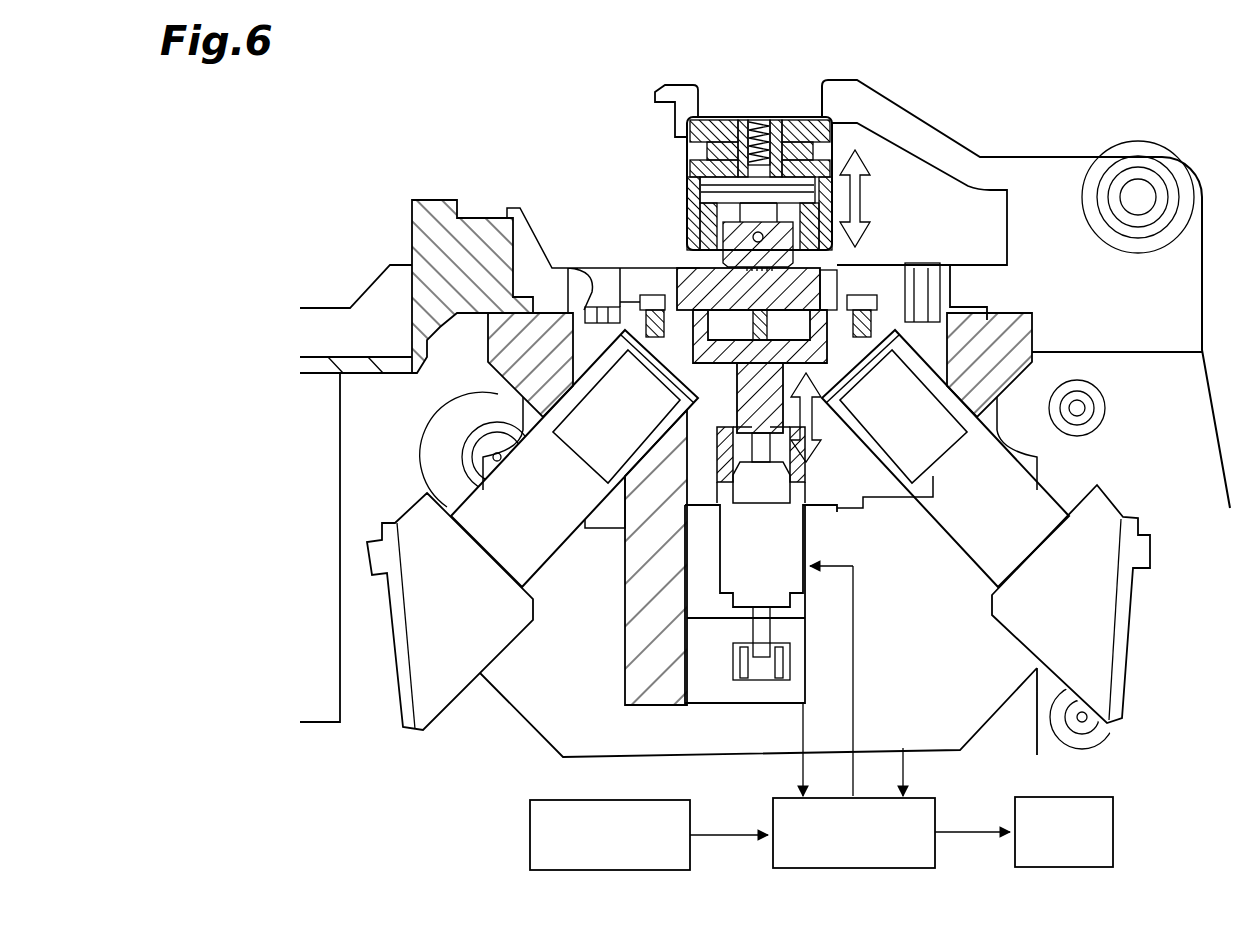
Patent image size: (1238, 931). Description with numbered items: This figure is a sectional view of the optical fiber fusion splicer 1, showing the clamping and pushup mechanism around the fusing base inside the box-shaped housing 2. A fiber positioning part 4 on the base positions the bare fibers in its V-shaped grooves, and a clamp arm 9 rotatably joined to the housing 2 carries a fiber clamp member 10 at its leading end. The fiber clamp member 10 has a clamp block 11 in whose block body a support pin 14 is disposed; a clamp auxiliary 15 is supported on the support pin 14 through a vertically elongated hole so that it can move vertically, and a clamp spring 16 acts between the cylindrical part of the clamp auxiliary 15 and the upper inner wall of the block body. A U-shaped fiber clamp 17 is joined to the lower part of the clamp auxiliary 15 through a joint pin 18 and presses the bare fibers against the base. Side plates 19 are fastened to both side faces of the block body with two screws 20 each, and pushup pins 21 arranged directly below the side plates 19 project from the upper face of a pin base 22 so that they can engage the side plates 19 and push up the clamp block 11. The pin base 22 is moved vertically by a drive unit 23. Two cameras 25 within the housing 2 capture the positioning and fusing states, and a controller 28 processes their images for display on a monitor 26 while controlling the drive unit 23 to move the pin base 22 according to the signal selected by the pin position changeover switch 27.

The optical fiber fusion splicer 1 is at (711, 137).
The housing 2 is at (362, 293).
The fiber positioning part 4 is at (712, 264).
The clamp arm 9 is at (920, 130).
The fiber clamp member 10 is at (684, 155).
The clamp block 11 is at (793, 115).
The support pin 14 is at (695, 190).
The clamp auxiliary 15 is at (752, 120).
The clamp spring 16 is at (764, 118).
The fiber clamp 17 is at (828, 265).
The joint pin 18 is at (752, 237).
The side plate 19 is at (873, 207).
The screw 20 is at (715, 122).
The pushup pin 21 is at (643, 268).
The pin base 22 is at (750, 398).
The drive unit 23 is at (783, 530).
The camera 25 is at (433, 640).
The monitor 26 is at (1115, 842).
The pin position changeover switch 27 is at (530, 837).
The controller 28 is at (868, 797).